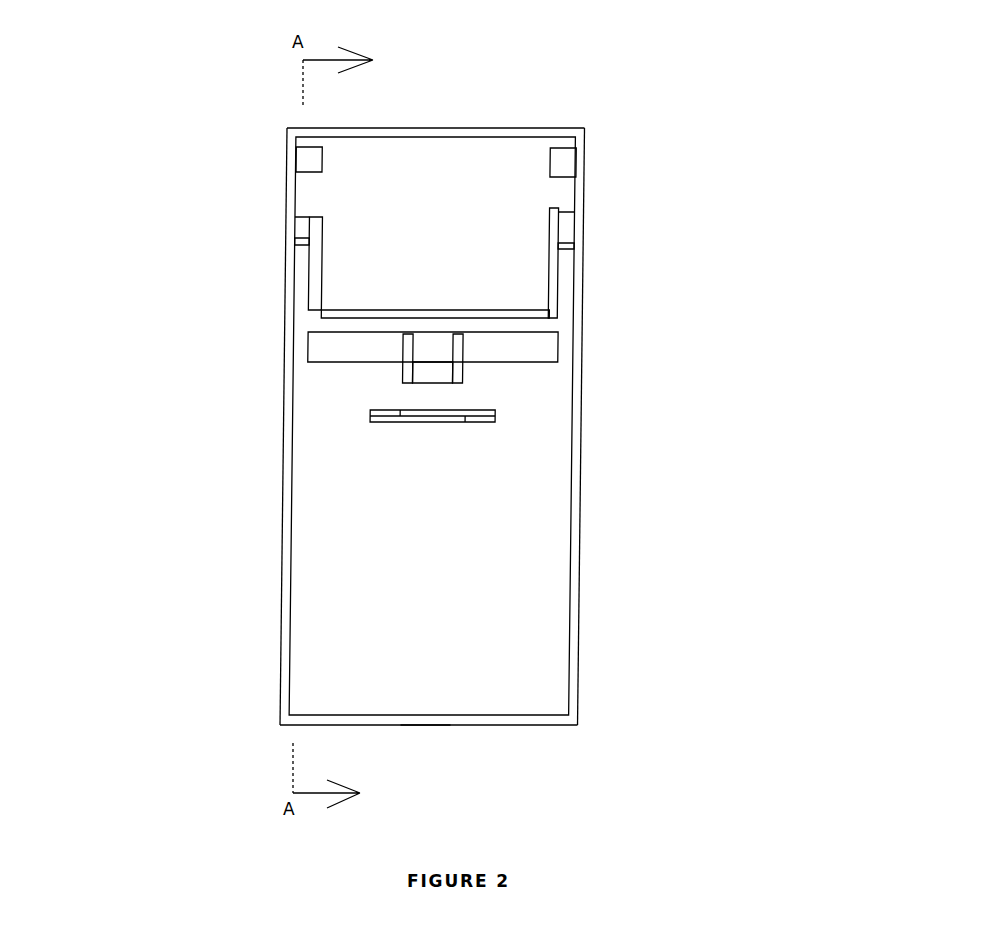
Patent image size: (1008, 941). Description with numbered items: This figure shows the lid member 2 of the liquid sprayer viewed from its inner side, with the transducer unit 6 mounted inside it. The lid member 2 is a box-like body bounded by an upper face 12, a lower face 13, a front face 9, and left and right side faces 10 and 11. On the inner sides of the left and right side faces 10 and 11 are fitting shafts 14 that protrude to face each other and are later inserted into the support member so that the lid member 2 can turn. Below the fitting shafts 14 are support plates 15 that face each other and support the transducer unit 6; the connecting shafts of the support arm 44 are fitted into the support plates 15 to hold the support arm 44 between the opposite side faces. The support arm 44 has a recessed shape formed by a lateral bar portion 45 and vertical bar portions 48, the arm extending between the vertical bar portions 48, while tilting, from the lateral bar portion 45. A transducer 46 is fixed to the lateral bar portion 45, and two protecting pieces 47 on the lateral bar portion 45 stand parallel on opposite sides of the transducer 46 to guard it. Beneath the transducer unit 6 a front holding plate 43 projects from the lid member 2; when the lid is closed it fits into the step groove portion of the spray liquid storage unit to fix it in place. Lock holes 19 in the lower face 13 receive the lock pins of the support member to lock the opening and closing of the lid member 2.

The lid member 2 is at (563, 73).
The upper face 12 is at (422, 128).
The fitting shaft 14 is at (305, 162).
The support plate 15 is at (310, 222).
The vertical bar portion 48 is at (318, 275).
The lateral bar portion 45 is at (320, 322).
The transducer unit 6 is at (578, 291).
The protecting piece 47 is at (455, 361).
The support arm 44 is at (558, 330).
The right side face 11 is at (283, 518).
The transducer 46 is at (458, 380).
The front holding plate 43 is at (495, 422).
The left side face 10 is at (570, 560).
The front face 9 is at (513, 657).
The lower face 13 is at (560, 725).
The lock hole 19 is at (405, 725).